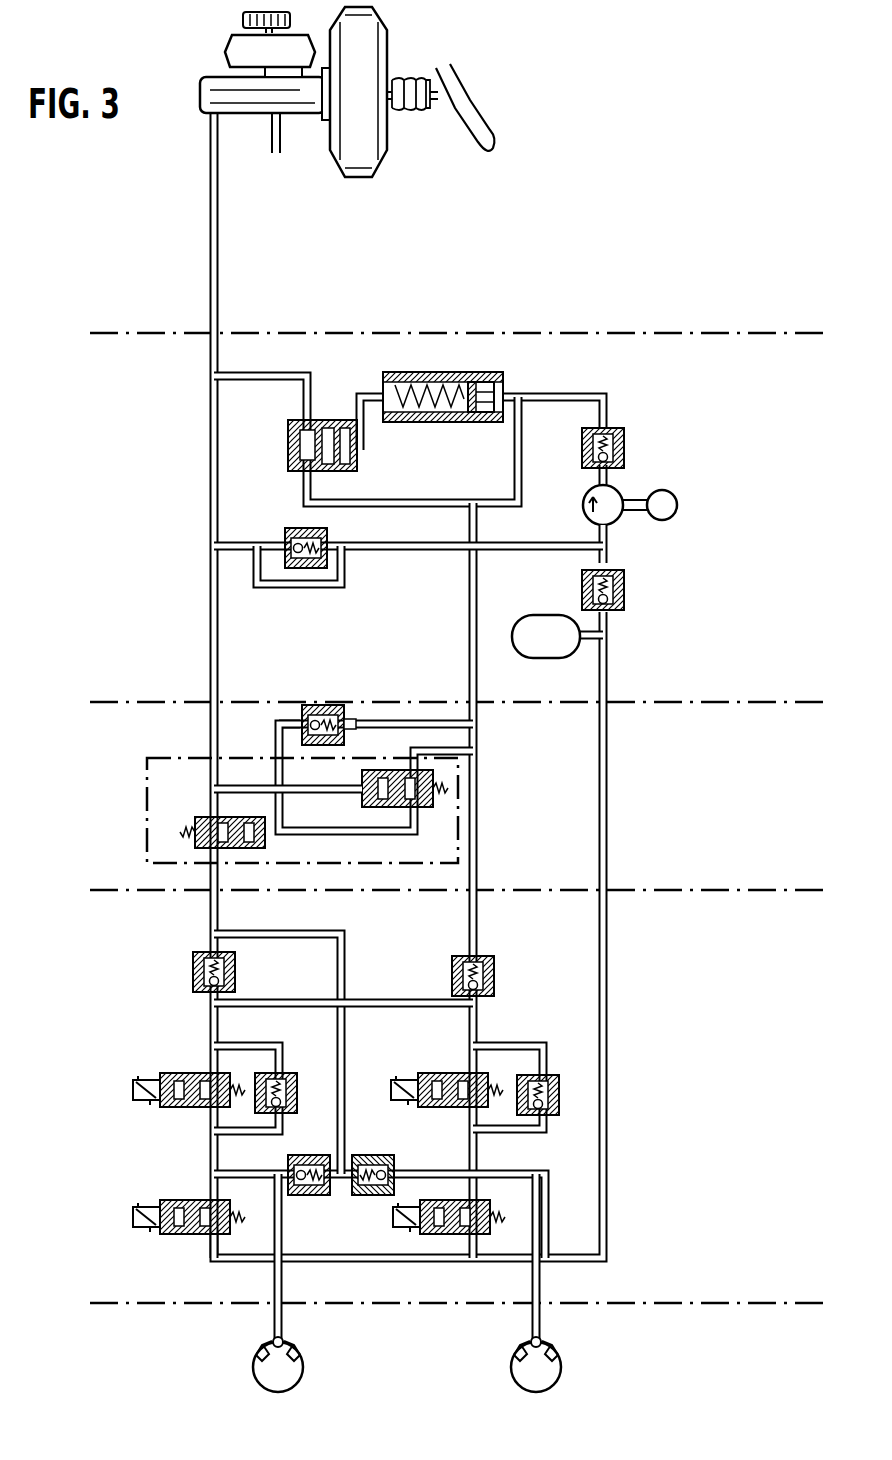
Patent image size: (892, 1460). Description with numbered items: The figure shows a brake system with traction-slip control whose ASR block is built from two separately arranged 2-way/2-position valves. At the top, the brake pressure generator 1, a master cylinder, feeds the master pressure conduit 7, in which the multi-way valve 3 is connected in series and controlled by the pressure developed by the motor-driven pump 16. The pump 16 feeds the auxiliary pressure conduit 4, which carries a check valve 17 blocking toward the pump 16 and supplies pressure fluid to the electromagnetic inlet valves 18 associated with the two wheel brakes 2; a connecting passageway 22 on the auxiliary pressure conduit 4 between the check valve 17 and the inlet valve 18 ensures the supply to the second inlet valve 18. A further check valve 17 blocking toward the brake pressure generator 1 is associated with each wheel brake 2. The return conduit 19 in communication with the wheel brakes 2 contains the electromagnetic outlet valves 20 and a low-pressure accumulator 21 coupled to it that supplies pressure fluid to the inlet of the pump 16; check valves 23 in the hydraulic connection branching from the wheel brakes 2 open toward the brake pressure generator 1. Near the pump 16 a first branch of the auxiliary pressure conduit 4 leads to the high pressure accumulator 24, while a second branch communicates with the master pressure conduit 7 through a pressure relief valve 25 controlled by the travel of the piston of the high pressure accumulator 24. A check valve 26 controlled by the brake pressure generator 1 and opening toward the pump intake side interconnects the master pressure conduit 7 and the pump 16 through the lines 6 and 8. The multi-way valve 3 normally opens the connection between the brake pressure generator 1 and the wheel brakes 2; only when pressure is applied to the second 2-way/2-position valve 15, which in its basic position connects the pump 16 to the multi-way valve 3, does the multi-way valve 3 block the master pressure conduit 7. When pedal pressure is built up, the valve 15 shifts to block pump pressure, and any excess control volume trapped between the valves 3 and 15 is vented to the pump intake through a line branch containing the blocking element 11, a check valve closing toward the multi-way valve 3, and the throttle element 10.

The brake pressure generator 1 is at (362, 48).
The wheel brake 2 is at (262, 1372).
The multi-way valve 3 is at (198, 818).
The auxiliary pressure conduit 4 is at (608, 393).
The line 6 is at (610, 552).
The master pressure conduit 7 is at (208, 224).
The line 8 is at (392, 552).
The throttle element 10 is at (371, 710).
The blocking element 11 is at (316, 704).
The second 2-way/2-position valve 15 is at (430, 808).
The pump 16 is at (614, 500).
The check valve 17 is at (192, 966).
The electromagnetic inlet valve 18 is at (186, 1072).
The return conduit 19 is at (610, 778).
The electromagnetic outlet valve 20 is at (182, 1200).
The low-pressure accumulator 21 is at (552, 636).
The connecting passageway 22 is at (362, 999).
The check valves 23 is at (306, 1196).
The high pressure accumulator 24 is at (477, 372).
The pressure relief valve 25 is at (330, 420).
The check valve 26 is at (292, 530).